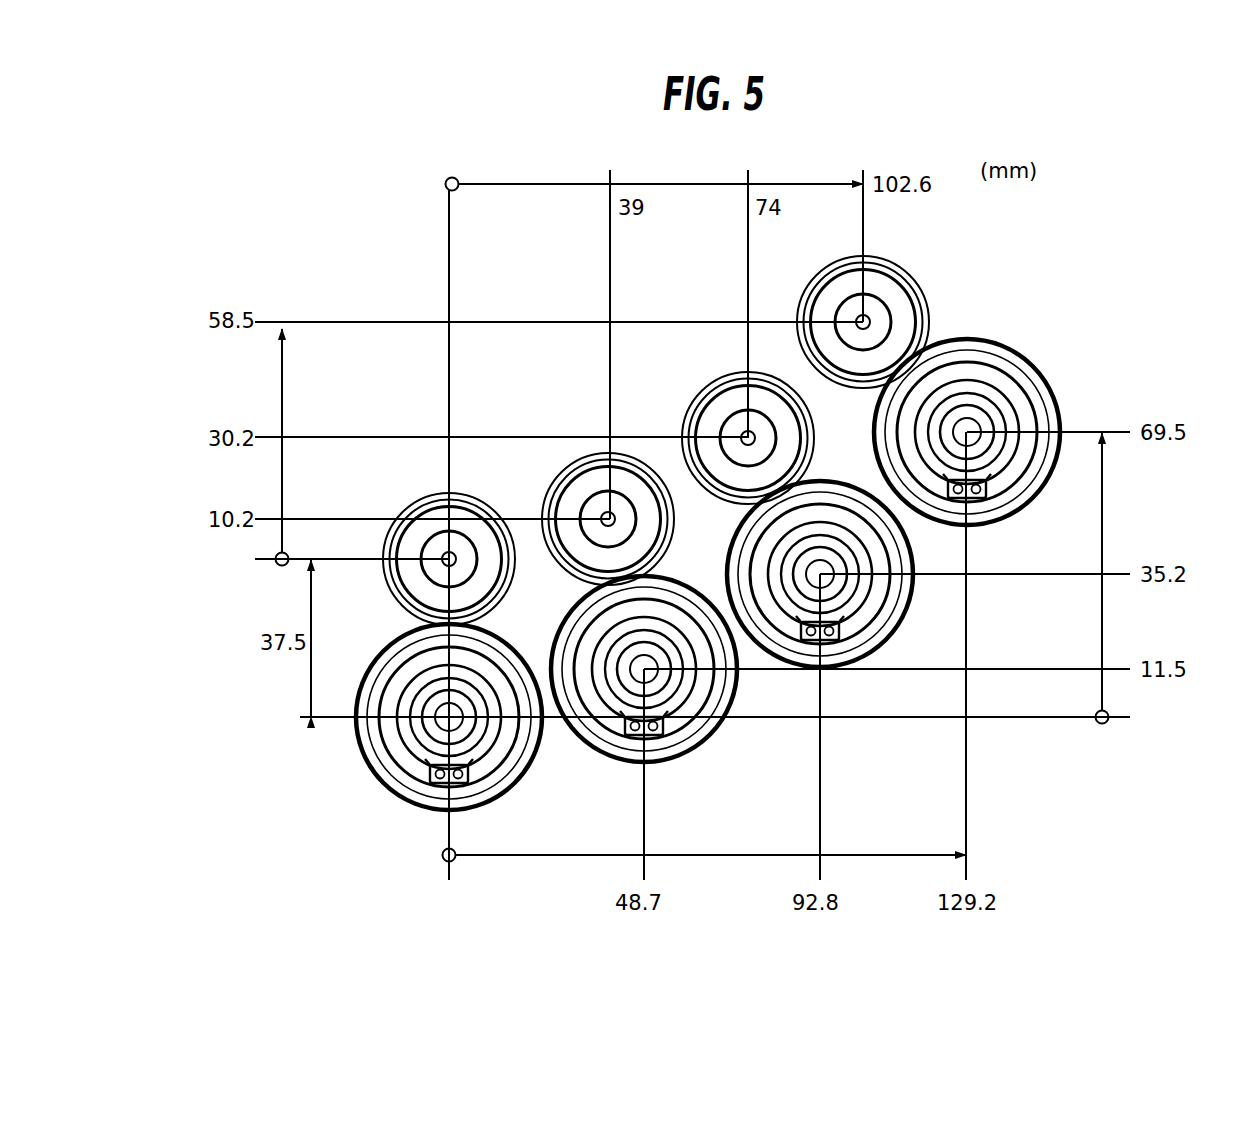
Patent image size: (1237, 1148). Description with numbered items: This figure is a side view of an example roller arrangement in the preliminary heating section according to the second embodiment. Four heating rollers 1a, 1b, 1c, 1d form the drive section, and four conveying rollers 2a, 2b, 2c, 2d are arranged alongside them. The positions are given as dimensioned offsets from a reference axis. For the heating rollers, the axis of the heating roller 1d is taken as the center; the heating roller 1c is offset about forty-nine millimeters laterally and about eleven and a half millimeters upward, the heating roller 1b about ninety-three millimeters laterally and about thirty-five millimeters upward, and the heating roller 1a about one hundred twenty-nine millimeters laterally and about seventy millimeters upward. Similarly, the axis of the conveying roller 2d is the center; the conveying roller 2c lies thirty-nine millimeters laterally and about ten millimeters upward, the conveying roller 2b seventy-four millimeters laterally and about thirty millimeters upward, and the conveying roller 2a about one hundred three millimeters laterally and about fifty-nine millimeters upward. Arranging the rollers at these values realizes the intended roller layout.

The heating roller 1a is at (1040, 366).
The heating roller 1b is at (905, 622).
The heating roller 1c is at (712, 735).
The heating roller 1d is at (520, 777).
The conveying roller 2a is at (907, 267).
The conveying roller 2b is at (712, 385).
The conveying roller 2c is at (555, 475).
The conveying roller 2d is at (412, 500).